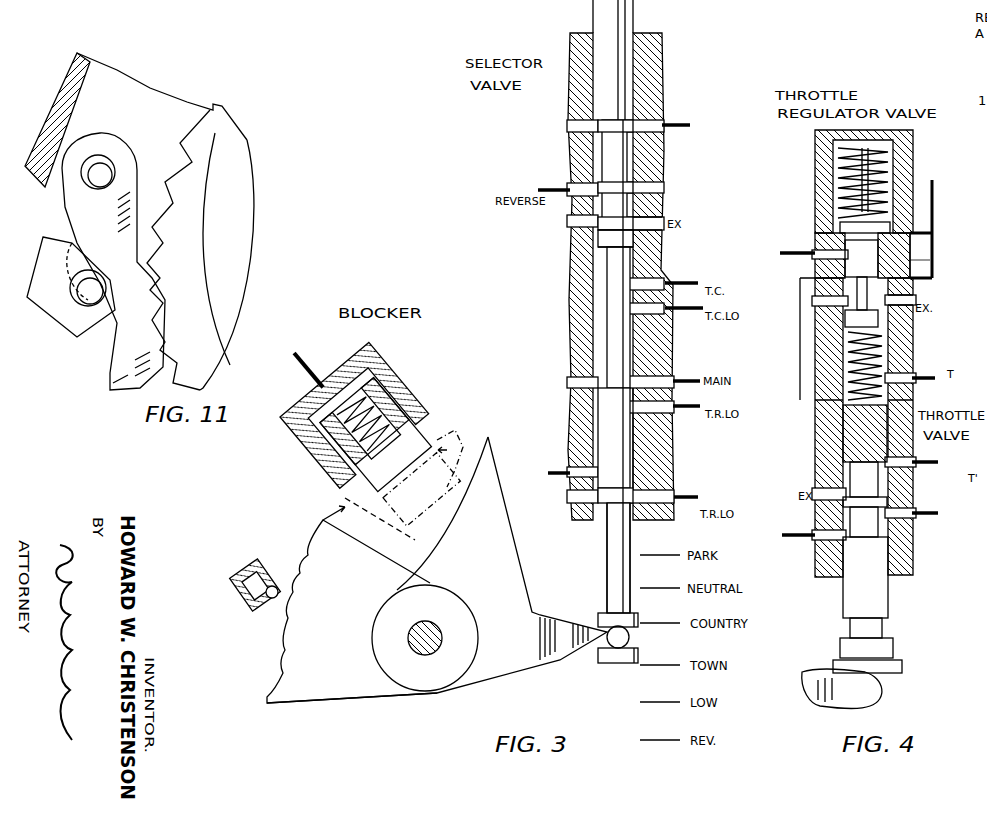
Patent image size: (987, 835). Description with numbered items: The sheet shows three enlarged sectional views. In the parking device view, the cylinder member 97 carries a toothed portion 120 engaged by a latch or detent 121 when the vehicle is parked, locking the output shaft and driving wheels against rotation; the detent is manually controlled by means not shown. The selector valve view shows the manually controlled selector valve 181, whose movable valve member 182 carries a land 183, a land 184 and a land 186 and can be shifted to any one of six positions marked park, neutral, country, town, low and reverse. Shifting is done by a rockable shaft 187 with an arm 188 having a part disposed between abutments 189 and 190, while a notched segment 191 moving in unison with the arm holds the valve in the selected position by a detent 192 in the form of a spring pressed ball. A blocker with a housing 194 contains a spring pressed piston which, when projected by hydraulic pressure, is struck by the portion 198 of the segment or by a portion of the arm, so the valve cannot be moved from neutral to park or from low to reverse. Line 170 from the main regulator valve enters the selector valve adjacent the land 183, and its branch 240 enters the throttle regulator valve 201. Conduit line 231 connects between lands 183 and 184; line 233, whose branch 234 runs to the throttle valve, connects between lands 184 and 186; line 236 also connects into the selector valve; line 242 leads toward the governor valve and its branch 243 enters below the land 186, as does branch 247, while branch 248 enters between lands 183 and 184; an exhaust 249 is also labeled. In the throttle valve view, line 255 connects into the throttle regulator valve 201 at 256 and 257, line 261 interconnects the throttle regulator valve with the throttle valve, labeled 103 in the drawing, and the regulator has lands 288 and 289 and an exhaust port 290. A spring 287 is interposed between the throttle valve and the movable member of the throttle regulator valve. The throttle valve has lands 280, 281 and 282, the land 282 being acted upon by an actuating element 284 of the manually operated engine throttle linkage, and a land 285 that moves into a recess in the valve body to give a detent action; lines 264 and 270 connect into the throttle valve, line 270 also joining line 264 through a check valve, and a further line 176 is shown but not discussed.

In FIG. 11, the toothed portion 120 is at (215, 108).
In FIG. 11, the cylinder member 97 is at (253, 148).
In FIG. 11, the latch or detent 121 is at (112, 376).
In FIG. 3, the selector valve 181 is at (670, 48).
In FIG. 3, the land 183 is at (630, 90).
In FIG. 3, the line 170 is at (552, 112).
In FIG. 3, the conduit line 231 is at (678, 128).
In FIG. 3, the branch line 248 is at (545, 188).
In FIG. 3, the exhaust passage 249 is at (652, 220).
In FIG. 3, the land 184 is at (633, 236).
In FIG. 3, the line 233 is at (710, 278).
In FIG. 3, the line 236 is at (682, 312).
In FIG. 3, the line 242 is at (688, 405).
In FIG. 3, the land 186 is at (632, 430).
In FIG. 3, the branch line 243 is at (683, 495).
In FIG. 3, the branch line 247 is at (556, 470).
In FIG. 3, the movable valve member 182 is at (607, 540).
In FIG. 3, the abutment 189 is at (605, 613).
In FIG. 3, the abutment 190 is at (612, 658).
In FIG. 3, the arm 188 is at (498, 577).
In FIG. 3, the rockable shaft 187 is at (417, 657).
In FIG. 3, the notched segment 191 is at (307, 693).
In FIG. 3, the detent 192 is at (243, 549).
In FIG. 3, the portion of the segment 198 is at (325, 518).
In FIG. 3, the housing 194 is at (377, 395).
In FIG. 4, the throttle regulator valve 201 is at (806, 181).
In FIG. 4, the line 255 is at (950, 172).
In FIG. 4, the connection 257 is at (923, 240).
In FIG. 4, the connection 256 is at (920, 273).
In FIG. 4, the branch line 240 is at (800, 247).
In FIG. 4, the land 289 is at (850, 270).
In FIG. 4, the line 261 is at (800, 300).
In FIG. 4, the exhaust port 290 is at (912, 302).
In FIG. 4, the land 288 is at (883, 327).
In FIG. 4, the spring 287 is at (878, 347).
In FIG. 4, the line 264 is at (922, 374).
In FIG. 4, the land 282 is at (843, 453).
In FIG. 4, the throttle valve 103 is at (922, 454).
In FIG. 4, the line 270 is at (922, 464).
In FIG. 4, the land 281 is at (887, 500).
In FIG. 4, the line 176 is at (922, 517).
In FIG. 4, the branch line 234 is at (798, 538).
In FIG. 4, the land 280 is at (890, 590).
In FIG. 4, the land 285 is at (895, 647).
In FIG. 4, the actuating element 284 is at (878, 690).